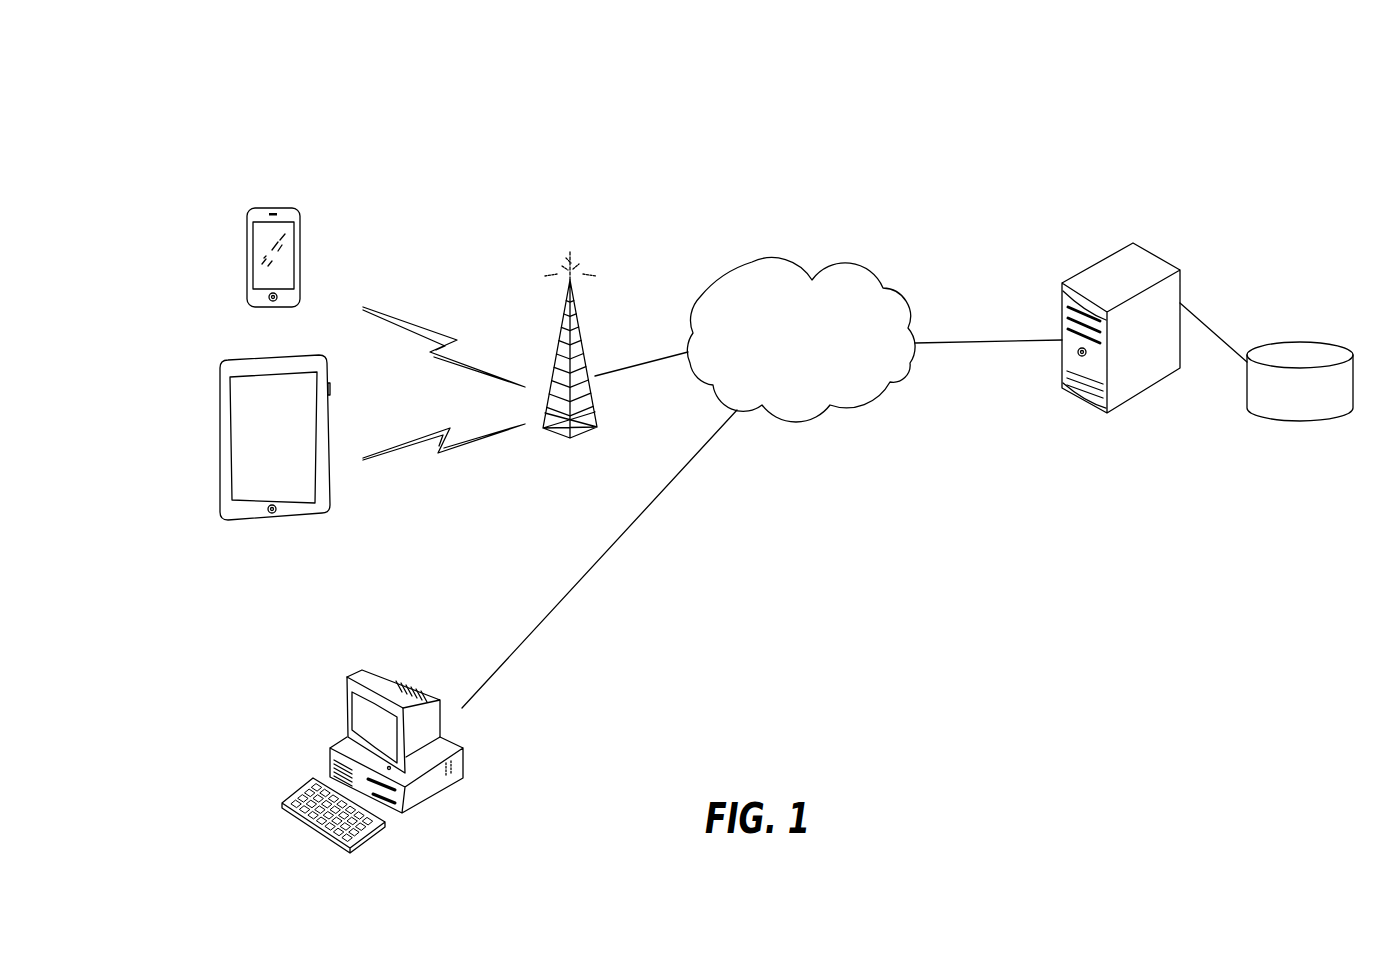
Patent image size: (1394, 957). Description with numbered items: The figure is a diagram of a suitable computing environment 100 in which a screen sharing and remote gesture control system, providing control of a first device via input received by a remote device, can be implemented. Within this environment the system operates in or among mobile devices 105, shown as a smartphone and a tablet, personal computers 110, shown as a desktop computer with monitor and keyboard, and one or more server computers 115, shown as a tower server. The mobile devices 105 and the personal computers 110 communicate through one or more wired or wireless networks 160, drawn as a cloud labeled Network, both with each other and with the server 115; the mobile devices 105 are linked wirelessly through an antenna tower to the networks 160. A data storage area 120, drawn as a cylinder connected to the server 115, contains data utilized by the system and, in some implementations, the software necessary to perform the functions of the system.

The computing environment 100 is at (458, 133).
The mobile devices 105 is at (272, 204).
The personal computers 110 is at (418, 807).
The server computers 115 is at (1124, 402).
The data storage area 120 is at (1328, 342).
The networks 160 is at (752, 262).